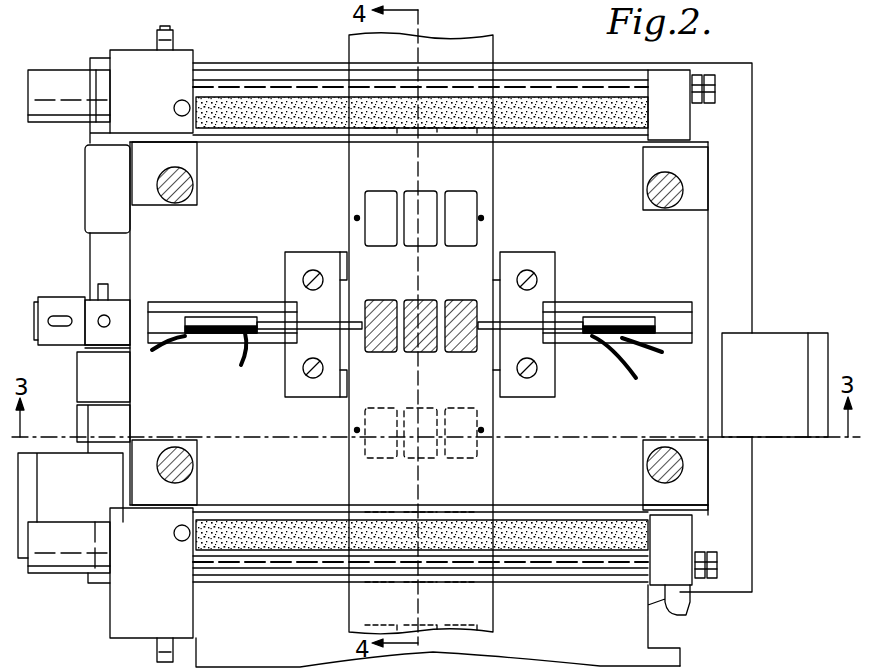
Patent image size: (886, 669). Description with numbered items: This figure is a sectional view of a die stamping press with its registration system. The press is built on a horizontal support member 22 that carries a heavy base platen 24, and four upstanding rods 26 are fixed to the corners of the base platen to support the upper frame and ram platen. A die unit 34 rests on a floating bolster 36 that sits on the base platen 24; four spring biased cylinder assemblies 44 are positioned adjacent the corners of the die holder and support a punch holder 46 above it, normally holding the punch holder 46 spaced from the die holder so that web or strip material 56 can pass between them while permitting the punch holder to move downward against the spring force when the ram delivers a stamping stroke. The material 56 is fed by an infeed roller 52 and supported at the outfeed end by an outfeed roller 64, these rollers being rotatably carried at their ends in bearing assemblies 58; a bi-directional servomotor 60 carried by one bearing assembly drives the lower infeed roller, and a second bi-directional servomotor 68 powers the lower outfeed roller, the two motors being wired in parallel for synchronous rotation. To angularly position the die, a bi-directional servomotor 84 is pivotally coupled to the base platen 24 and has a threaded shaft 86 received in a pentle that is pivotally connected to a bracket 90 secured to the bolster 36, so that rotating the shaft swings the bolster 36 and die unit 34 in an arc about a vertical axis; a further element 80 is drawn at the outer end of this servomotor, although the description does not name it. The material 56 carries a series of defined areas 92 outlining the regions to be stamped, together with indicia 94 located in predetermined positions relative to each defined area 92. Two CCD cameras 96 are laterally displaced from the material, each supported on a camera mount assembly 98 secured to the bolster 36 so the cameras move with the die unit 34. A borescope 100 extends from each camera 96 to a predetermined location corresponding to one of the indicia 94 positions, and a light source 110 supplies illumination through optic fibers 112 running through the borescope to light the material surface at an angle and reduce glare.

The horizontal support member 22 is at (745, 101).
The base platen 24 is at (690, 485).
The upstanding rods 26 is at (193, 182).
The die unit 34 is at (562, 246).
The floating bolster 36 is at (726, 235).
The spring biased cylinder assemblies 44 is at (318, 277).
The punch holder 46 is at (497, 288).
The infeed roller 52 is at (548, 525).
The web or strip material 56 is at (478, 596).
The bearing assemblies 58 is at (123, 56).
The bi-directional servomotor 60 is at (52, 535).
The outfeed roller 64 is at (560, 130).
The bi-directional servomotor 68 is at (57, 80).
The actuator 80 is at (68, 303).
The bi-directional servomotor 84 is at (90, 376).
The threaded shaft 86 is at (113, 318).
The bracket 90 is at (118, 335).
The defined areas 92 is at (462, 200).
The indicia 94 is at (360, 189).
The cameras 96 is at (200, 316).
The camera mount assembly 98 is at (208, 341).
The borescope 100 is at (245, 316).
The light source 110 is at (772, 338).
The optic fibers 112 is at (245, 362).